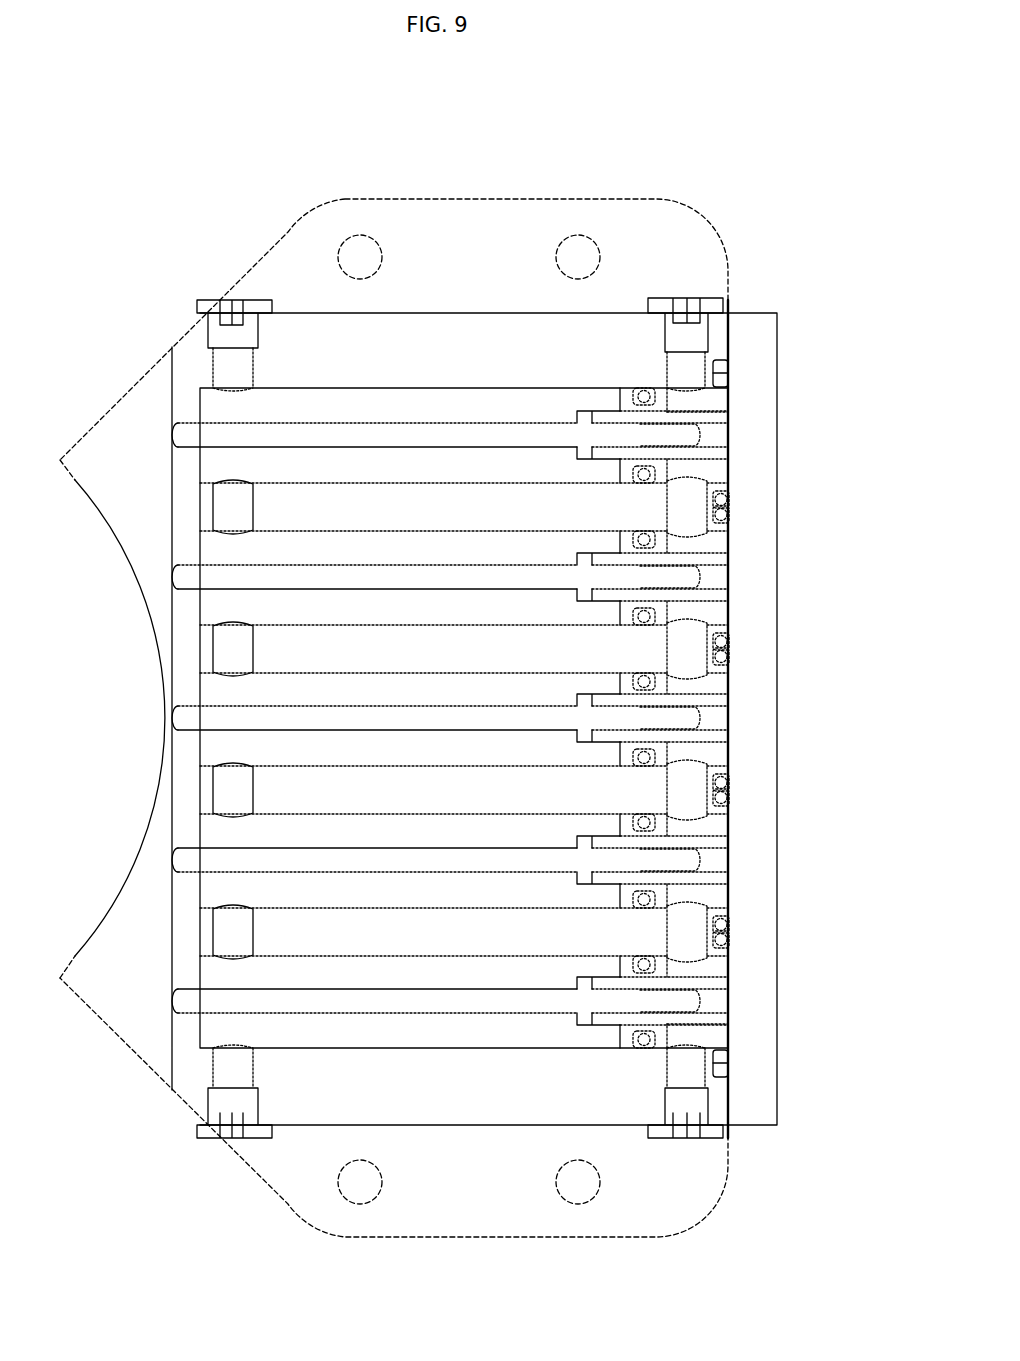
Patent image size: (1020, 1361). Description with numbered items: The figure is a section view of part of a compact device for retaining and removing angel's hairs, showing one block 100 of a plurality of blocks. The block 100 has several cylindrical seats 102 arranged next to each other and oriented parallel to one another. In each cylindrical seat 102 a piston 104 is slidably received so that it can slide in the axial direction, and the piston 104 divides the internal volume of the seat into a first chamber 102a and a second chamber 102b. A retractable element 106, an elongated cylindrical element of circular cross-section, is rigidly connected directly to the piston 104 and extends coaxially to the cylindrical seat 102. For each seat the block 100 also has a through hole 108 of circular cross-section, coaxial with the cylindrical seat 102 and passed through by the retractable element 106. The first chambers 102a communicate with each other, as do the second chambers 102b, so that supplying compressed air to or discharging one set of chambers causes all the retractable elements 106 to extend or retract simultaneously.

The block 100 is at (318, 312).
The cylindrical seat 102 is at (440, 390).
The first chamber 102a is at (362, 400).
The second chamber 102b is at (710, 398).
The piston 104 is at (638, 395).
The retractable element 106 is at (507, 422).
The through hole 108 is at (187, 447).